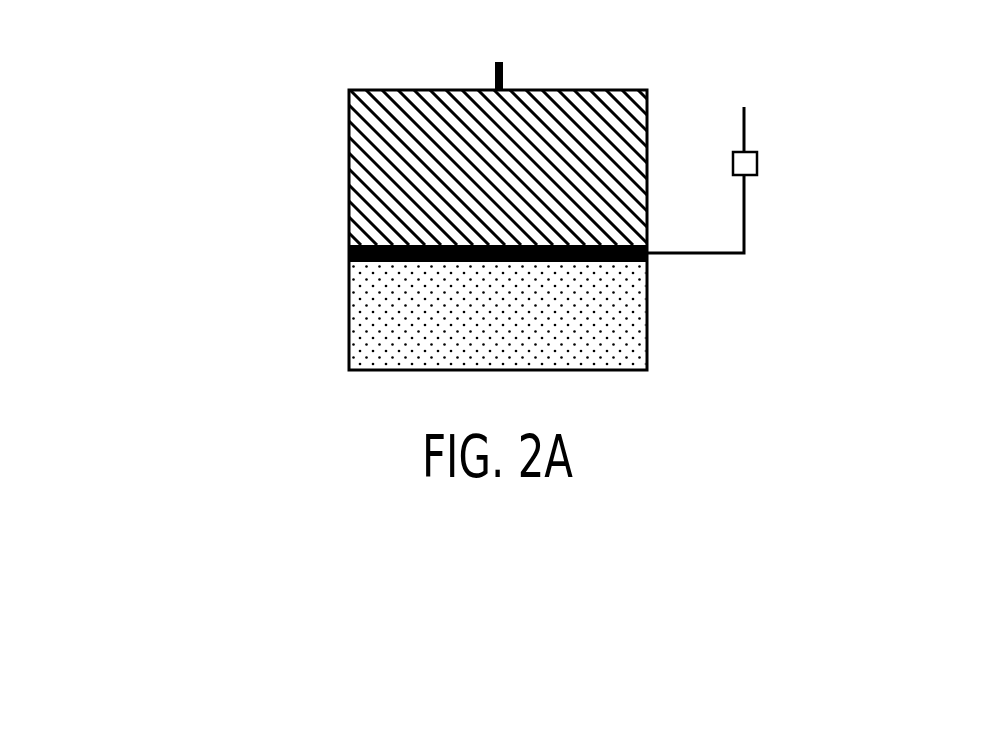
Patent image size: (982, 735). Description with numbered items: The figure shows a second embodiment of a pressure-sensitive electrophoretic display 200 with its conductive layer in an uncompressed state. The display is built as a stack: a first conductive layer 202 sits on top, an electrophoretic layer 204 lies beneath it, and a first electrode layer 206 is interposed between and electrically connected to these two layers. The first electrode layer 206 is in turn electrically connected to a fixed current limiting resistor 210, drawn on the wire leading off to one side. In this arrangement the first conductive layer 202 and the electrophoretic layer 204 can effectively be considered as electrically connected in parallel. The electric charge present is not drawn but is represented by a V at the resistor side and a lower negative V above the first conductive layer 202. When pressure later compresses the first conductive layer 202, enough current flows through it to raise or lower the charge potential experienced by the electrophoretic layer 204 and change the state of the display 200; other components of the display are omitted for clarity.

The pressure-sensitive electrophoretic display 200 is at (232, 99).
The first conductive layer 202 is at (349, 170).
The electrophoretic layer 204 is at (358, 313).
The first electrode layer 206 is at (349, 255).
The fixed current limiting resistor 210 is at (757, 165).